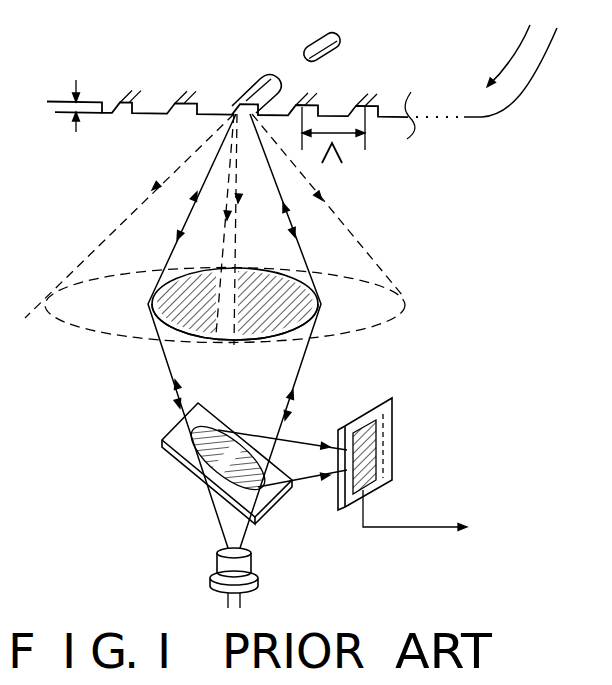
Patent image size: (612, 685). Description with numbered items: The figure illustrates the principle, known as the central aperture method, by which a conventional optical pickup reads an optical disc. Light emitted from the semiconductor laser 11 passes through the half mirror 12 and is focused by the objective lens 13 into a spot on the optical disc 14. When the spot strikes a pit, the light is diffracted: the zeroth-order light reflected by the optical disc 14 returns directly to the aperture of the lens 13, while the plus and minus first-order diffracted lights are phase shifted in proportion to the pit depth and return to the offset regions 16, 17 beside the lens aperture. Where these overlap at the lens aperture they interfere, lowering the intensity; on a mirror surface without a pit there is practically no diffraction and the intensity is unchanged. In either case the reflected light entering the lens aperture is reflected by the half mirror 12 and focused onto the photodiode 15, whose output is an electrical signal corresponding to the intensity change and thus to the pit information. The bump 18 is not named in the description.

The semiconductor laser 11 is at (258, 577).
The half mirror 12 is at (292, 488).
The objective lens 13 is at (280, 346).
The optical disc 14 is at (302, 99).
The photodiode 15 is at (395, 438).
The offset region 16 is at (392, 312).
The offset region 17 is at (70, 322).
The defect particle 18 is at (267, 70).